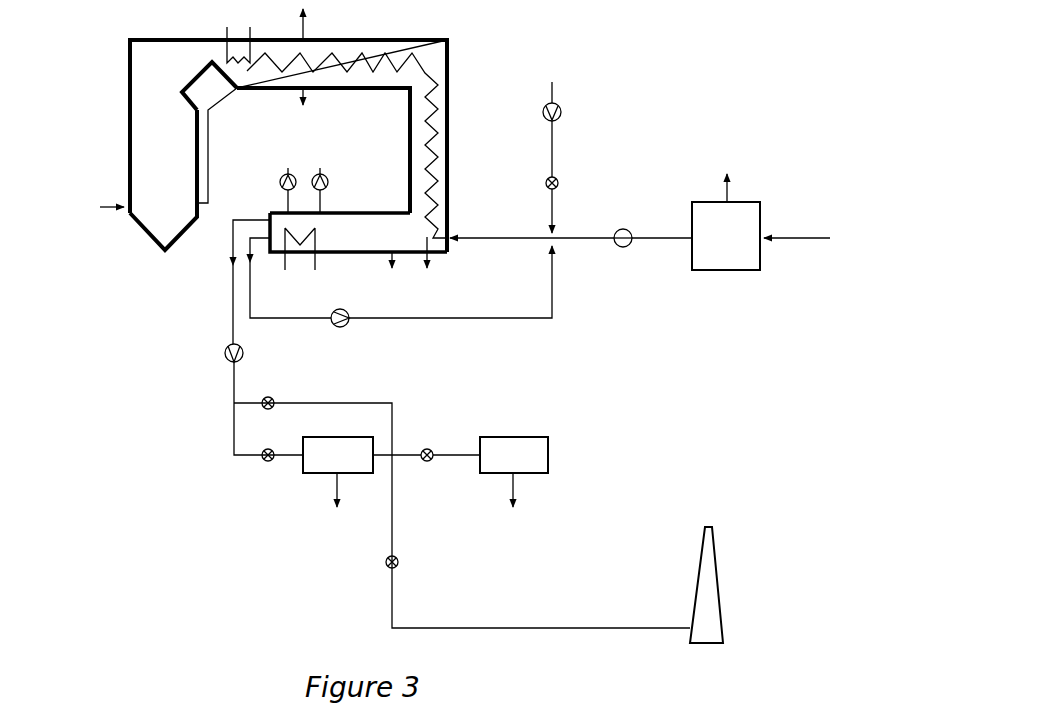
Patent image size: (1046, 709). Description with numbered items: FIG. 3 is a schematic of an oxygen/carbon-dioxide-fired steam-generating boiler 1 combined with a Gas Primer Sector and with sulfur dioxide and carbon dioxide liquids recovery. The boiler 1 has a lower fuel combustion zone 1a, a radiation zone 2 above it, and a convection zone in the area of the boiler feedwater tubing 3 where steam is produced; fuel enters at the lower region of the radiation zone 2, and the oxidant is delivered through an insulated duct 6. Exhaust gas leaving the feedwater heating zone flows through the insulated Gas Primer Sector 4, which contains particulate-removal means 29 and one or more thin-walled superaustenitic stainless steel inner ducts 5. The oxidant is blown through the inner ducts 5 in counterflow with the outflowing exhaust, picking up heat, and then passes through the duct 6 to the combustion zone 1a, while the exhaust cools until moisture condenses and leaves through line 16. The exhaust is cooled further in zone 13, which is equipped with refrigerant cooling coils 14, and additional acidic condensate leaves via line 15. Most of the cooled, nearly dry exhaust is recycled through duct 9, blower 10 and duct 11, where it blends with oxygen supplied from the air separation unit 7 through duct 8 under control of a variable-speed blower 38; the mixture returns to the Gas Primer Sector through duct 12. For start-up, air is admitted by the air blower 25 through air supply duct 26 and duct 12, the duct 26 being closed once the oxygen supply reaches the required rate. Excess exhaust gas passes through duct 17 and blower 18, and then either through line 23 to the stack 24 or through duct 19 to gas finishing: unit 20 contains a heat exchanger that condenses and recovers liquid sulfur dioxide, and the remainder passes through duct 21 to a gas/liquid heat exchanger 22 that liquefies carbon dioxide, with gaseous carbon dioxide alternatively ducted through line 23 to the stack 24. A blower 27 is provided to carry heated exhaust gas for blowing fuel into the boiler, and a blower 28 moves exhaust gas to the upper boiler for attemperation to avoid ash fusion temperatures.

The boiler 1 is at (127, 50).
The fuel combustion zone 1a is at (124, 180).
The radiation zone 2 is at (149, 130).
The boiler feedwater tubing 3 is at (238, 34).
The Gas Primer Sector 4 is at (343, 40).
The inner duct 5 is at (447, 40).
The insulated duct 6 is at (209, 141).
The air separation unit 7 is at (778, 234).
The duct 8 is at (584, 236).
The duct 9 is at (280, 320).
The blower 10 is at (341, 331).
The duct 11 is at (400, 320).
The duct 12 is at (485, 241).
The cooling zone 13 is at (358, 232).
The refrigerant cooling coils 14 is at (300, 263).
The line 15 is at (394, 277).
The line 16 is at (430, 269).
The duct 17 is at (231, 292).
The blower 18 is at (220, 355).
The duct 19 is at (232, 439).
The unit 20 is at (338, 507).
The duct 21 is at (467, 456).
The gas/liquid heat exchanger 22 is at (514, 507).
The line 23 is at (326, 403).
The stack 24 is at (721, 606).
The air blower 25 is at (563, 119).
The air supply duct 26 is at (557, 163).
The blower 27 is at (274, 190).
The blower 28 is at (333, 190).
The particulate removing means 29 is at (323, 150).
The blower 38 is at (623, 251).